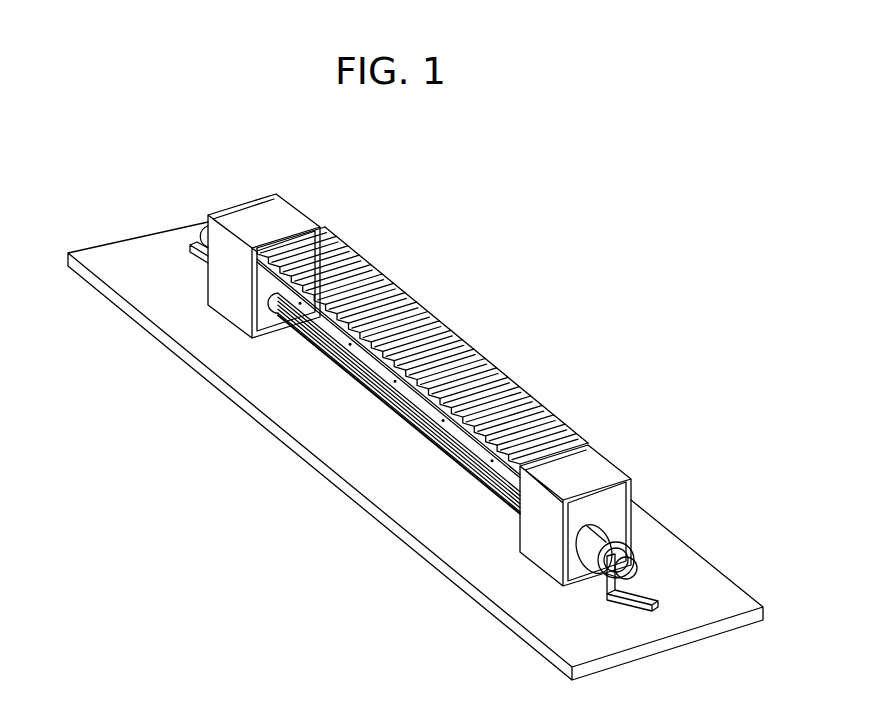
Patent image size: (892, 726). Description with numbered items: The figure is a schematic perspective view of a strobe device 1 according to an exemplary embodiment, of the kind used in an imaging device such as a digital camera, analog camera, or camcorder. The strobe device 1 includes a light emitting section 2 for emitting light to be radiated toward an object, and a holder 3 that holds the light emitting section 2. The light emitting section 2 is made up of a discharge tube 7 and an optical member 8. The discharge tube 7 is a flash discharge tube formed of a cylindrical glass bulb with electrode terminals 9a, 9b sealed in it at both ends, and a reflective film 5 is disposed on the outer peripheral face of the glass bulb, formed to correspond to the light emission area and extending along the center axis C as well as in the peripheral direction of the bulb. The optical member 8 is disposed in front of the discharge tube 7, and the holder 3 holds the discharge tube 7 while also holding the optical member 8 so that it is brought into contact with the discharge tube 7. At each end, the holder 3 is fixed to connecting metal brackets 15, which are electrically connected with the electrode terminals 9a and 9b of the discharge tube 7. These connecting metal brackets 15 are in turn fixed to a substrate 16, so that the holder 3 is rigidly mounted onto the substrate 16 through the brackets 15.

The strobe device 1 is at (537, 298).
The light emitting section 2 is at (158, 415).
The holder 3 is at (283, 213).
The reflective film 5 is at (395, 408).
The discharge tube 7 is at (310, 345).
The optical member 8 is at (292, 300).
The electrode terminal 9a is at (630, 557).
The electrode terminal 9b is at (208, 233).
The connecting metal bracket 15 is at (200, 247).
The substrate 16 is at (478, 541).
The center axis C is at (450, 427).